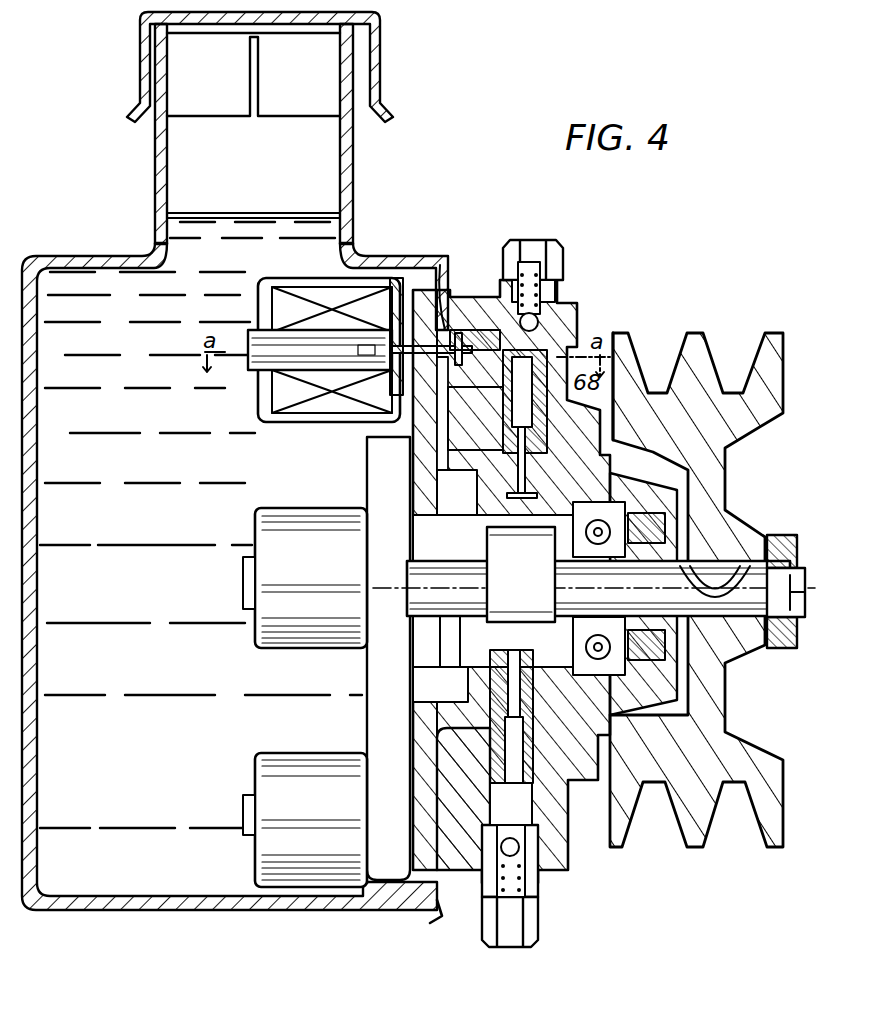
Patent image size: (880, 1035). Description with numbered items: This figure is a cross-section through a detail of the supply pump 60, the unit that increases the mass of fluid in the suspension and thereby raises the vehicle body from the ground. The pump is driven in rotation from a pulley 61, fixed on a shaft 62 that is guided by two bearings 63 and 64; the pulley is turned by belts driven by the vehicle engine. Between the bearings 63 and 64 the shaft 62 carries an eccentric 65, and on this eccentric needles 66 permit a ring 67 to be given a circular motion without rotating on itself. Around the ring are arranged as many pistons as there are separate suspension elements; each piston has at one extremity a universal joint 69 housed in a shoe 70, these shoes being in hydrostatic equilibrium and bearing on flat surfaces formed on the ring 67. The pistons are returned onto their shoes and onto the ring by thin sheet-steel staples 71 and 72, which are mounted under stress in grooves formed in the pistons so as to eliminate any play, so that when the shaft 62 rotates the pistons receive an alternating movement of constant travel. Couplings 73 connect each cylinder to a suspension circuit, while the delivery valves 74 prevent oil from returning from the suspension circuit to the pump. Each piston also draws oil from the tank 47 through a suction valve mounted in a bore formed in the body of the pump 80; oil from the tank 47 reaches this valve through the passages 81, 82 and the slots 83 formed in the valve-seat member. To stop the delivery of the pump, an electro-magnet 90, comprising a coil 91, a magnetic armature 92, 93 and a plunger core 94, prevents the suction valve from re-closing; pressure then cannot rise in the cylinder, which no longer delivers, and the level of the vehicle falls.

The tank 47 is at (94, 535).
The pump 60 is at (440, 265).
The pulley 61 is at (690, 820).
The shaft 62 is at (775, 655).
The bearing 63 is at (582, 720).
The bearing 64 is at (425, 553).
The eccentric 65 is at (594, 581).
The needles 66 is at (428, 662).
The ring 67 is at (521, 574).
The universal joints 69 is at (440, 732).
The shoes 70 is at (625, 400).
The sheet-steel staple 71 is at (450, 680).
The sheet-steel staple 72 is at (428, 636).
The couplings 73 is at (560, 250).
The delivery valves 74 is at (565, 292).
The body of the pump 80 is at (578, 320).
The passage 81 is at (457, 496).
The passage 82 is at (420, 455).
The slots 83 is at (460, 330).
The electro-magnet 90 is at (268, 422).
The coil 91 is at (310, 393).
The magnetic armature 92 is at (292, 422).
The magnetic armature 93 is at (380, 450).
The plunger core 94 is at (250, 338).